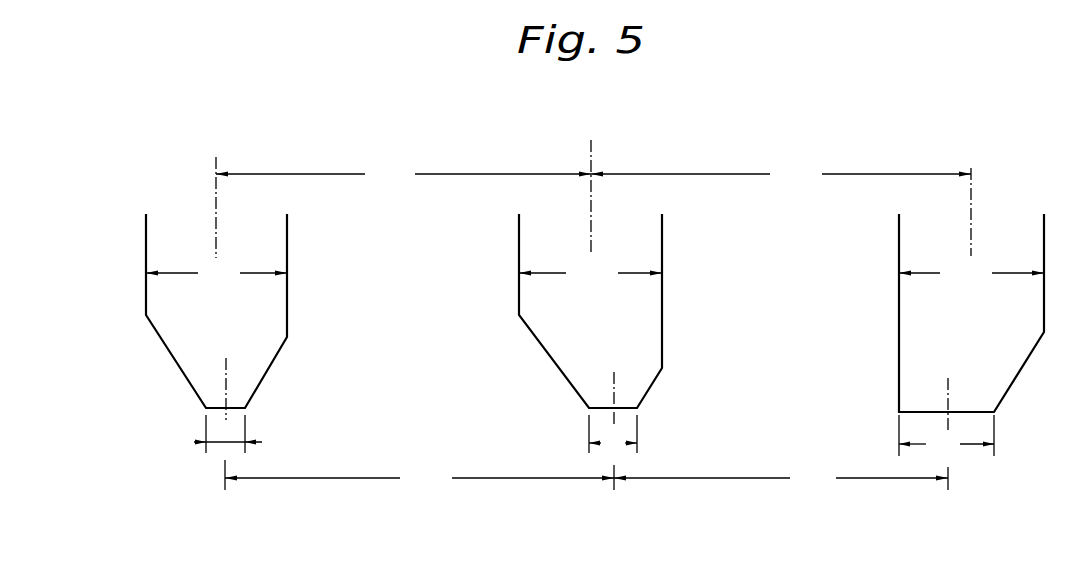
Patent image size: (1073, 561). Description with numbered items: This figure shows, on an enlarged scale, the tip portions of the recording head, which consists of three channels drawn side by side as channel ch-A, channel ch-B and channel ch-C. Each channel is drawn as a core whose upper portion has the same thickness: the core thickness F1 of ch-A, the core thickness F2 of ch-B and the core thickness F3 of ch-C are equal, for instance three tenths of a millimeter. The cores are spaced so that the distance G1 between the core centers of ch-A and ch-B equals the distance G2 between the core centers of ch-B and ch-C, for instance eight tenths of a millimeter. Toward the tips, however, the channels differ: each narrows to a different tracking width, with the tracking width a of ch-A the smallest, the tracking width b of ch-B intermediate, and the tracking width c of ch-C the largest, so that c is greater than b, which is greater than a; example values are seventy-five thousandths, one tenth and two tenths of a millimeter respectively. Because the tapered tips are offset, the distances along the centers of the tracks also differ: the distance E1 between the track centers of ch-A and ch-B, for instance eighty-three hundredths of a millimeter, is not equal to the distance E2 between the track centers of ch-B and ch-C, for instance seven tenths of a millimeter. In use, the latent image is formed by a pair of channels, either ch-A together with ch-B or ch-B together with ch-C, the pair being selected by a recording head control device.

The channel A ch-A is at (145, 286).
The channel B ch-B is at (519, 289).
The channel C ch-C is at (899, 298).
The core thickness of channel A F1 is at (216, 278).
The core thickness of channel B F2 is at (590, 278).
The core thickness of channel C F3 is at (971, 278).
The distance between core centers of channels A and B G1 is at (403, 178).
The distance between core centers of channels B and C G2 is at (781, 178).
The distance along track centers between channels A and B E1 is at (419, 477).
The distance along track centers between channels B and C E2 is at (781, 481).
The tracking width of channel A a is at (228, 434).
The tracking width of channel B b is at (613, 434).
The tracking width of channel C c is at (946, 435).